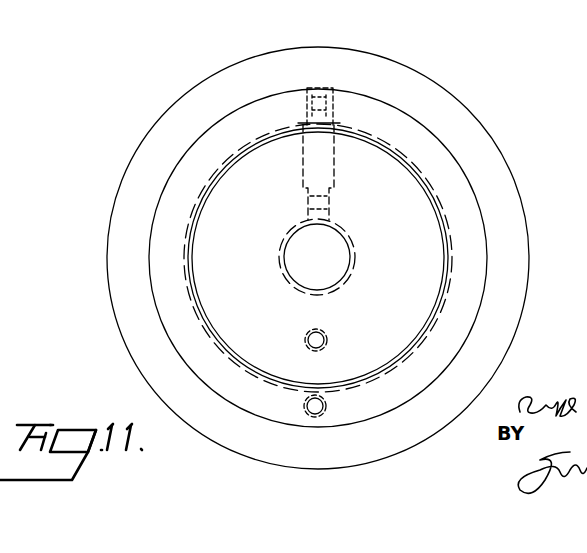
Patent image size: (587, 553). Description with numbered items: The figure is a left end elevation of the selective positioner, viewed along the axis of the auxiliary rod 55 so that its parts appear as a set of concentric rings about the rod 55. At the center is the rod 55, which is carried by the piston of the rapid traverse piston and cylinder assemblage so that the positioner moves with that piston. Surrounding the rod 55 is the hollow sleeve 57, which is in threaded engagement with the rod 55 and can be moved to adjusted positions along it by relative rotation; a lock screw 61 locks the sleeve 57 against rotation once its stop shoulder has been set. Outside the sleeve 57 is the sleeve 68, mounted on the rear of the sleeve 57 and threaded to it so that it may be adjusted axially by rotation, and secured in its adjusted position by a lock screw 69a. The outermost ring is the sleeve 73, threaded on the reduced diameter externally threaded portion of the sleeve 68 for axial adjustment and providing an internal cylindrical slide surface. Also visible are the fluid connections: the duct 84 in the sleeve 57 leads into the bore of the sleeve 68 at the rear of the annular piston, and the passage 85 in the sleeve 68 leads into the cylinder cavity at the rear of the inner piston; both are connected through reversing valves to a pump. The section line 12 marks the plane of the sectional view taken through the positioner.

The section line 12- 12 is at (320, 88).
The auxiliary rod 55 is at (333, 273).
The hollow sleeve 57 is at (432, 252).
The lock screw 61 is at (308, 200).
The sleeve 68 is at (470, 183).
The lock screw 69a is at (338, 100).
The sleeve 73 is at (472, 113).
The duct 84 is at (308, 338).
The passage 85 is at (318, 400).